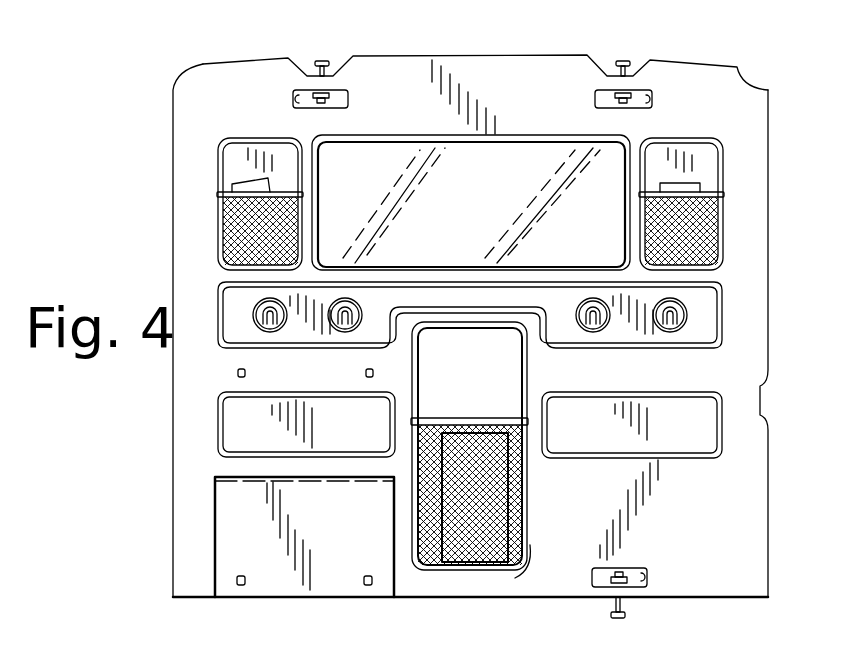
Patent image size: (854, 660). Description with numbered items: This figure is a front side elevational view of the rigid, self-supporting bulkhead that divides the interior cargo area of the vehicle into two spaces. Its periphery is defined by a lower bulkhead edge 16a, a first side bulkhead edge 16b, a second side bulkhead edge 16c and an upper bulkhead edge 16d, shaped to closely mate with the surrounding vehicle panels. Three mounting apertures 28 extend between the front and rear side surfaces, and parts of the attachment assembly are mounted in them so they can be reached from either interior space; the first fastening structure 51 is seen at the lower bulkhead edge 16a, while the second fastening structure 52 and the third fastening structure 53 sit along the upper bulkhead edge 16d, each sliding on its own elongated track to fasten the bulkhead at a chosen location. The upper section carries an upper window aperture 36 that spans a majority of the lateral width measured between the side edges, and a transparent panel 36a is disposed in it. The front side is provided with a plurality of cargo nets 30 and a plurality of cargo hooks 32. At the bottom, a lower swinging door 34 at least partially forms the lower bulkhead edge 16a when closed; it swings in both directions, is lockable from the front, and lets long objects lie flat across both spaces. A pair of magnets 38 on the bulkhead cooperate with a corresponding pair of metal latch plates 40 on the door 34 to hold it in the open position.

The lower bulkhead edge 16a is at (478, 606).
The first side bulkhead edge 16b is at (173, 452).
The second side bulkhead edge 16c is at (770, 467).
The upper bulkhead edge 16d is at (471, 48).
The mounting apertures 28 is at (293, 100).
The cargo nets 30 is at (720, 213).
The cargo hooks 32 is at (688, 313).
The lower swinging door 34 is at (322, 542).
The upper window aperture 36 is at (628, 172).
The transparent panel 36a is at (505, 187).
The magnets 38 is at (245, 373).
The metal latch plates 40 is at (240, 588).
The first fastening structure 51 is at (655, 601).
The second fastening structure 52 is at (638, 53).
The third fastening structure 53 is at (303, 52).